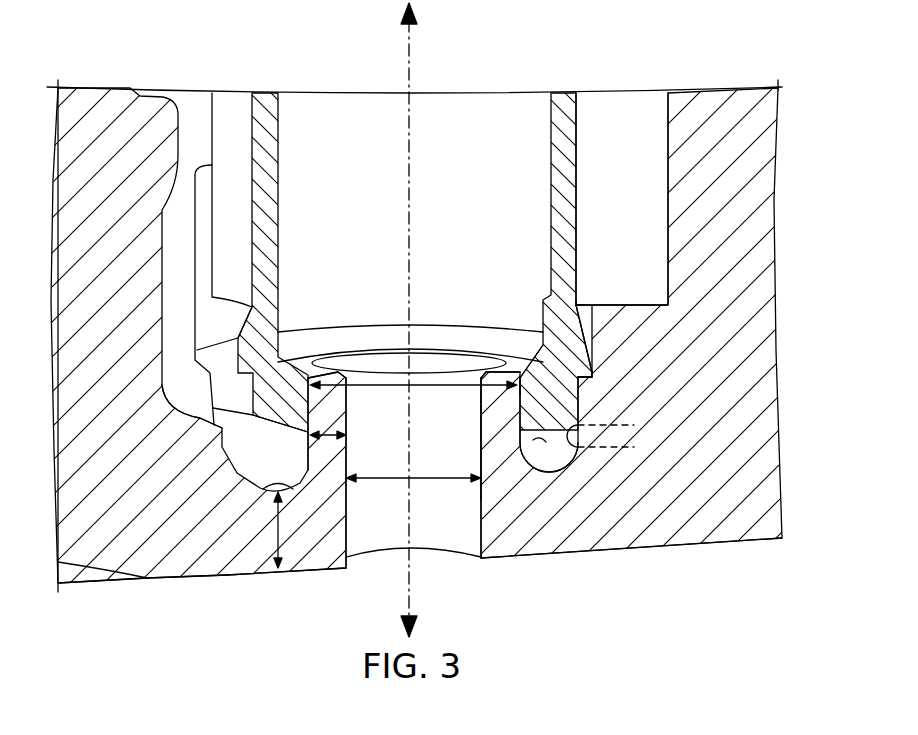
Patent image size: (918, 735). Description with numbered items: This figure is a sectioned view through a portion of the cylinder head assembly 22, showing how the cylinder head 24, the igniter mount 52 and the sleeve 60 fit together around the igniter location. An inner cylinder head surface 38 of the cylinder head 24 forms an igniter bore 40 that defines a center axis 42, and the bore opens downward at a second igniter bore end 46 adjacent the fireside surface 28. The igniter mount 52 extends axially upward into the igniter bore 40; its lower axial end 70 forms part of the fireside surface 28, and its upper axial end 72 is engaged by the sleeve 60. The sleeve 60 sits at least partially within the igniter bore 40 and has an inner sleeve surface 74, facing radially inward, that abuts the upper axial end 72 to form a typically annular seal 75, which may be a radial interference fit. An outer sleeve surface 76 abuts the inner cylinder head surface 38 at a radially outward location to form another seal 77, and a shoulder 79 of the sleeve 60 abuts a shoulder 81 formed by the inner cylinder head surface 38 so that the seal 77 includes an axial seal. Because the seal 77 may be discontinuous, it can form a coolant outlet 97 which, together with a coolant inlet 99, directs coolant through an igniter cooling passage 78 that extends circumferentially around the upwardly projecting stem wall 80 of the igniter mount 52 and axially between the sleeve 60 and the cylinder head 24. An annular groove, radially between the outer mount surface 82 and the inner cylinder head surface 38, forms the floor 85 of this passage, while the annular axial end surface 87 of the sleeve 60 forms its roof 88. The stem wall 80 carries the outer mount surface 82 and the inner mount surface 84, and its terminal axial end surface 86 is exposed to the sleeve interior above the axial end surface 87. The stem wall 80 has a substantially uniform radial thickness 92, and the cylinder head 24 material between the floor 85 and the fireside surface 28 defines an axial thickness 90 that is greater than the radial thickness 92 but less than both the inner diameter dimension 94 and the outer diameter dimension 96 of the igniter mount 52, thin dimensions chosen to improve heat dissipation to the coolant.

The cylinder head assembly 22 is at (128, 72).
The cylinder head 24 is at (750, 90).
The fireside surface 28 is at (228, 578).
The inner cylinder head surface 38 is at (576, 306).
The igniter bore 40 is at (628, 120).
The center axis 42 is at (411, 36).
The second igniter bore end 46 is at (436, 518).
The igniter mount 52 is at (484, 448).
The sleeve 60 is at (568, 92).
The lower axial end 70 is at (505, 542).
The upper axial end 72 is at (484, 372).
The inner sleeve surface 74 is at (346, 398).
The seal 75 is at (290, 410).
The outer sleeve surface 76 is at (584, 318).
The seal 77 is at (596, 370).
The igniter cooling passage 78 is at (520, 470).
The shoulder 79 is at (249, 360).
The upwardly projecting stem wall 80 is at (484, 416).
The shoulder 81 is at (584, 379).
The outer mount surface 82 is at (520, 376).
The inner mount surface 84 is at (466, 392).
The floor 85 is at (558, 462).
The terminal axial end surface 86 is at (312, 372).
The axial end surface 87 is at (262, 476).
The roof 88 is at (284, 432).
The axial thickness 90 is at (282, 530).
The radial thickness 92 is at (318, 440).
The inner diameter dimension 94 is at (400, 478).
The outer diameter dimension 96 is at (402, 378).
The coolant outlet 97 is at (203, 416).
The coolant inlet 99 is at (606, 425).